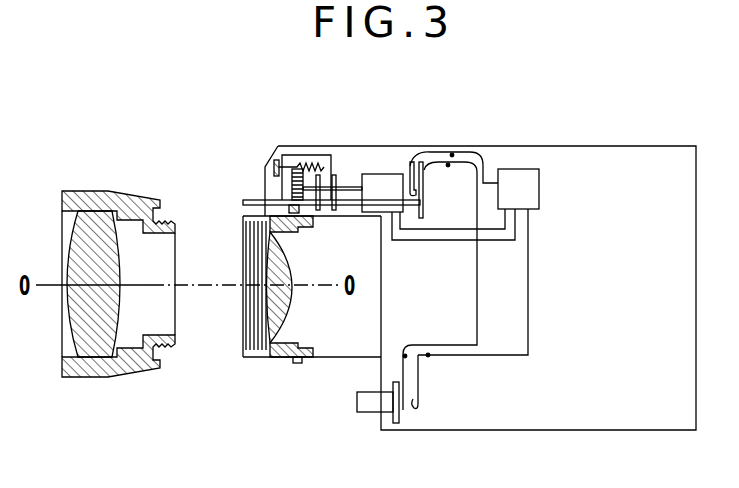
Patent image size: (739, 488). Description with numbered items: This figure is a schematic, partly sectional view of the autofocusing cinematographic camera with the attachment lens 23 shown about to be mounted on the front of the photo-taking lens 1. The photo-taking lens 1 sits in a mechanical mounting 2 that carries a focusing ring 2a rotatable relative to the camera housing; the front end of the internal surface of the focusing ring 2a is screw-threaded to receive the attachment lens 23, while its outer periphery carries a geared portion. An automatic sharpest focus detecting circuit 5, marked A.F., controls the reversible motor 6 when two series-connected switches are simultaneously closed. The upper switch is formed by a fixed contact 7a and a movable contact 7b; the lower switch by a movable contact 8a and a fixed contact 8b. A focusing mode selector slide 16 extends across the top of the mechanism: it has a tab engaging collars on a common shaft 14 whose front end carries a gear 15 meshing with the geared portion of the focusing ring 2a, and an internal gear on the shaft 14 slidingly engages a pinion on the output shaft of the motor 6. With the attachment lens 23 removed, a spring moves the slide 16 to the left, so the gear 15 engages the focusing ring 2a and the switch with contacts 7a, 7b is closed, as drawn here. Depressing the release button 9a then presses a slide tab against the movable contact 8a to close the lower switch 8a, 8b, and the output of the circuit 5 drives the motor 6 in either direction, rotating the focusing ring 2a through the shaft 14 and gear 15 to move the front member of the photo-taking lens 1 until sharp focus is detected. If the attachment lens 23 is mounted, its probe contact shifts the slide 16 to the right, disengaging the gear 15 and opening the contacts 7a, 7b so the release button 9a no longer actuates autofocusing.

The attachment lens 23 is at (105, 360).
The slide 16 is at (252, 198).
The gear 15 is at (295, 168).
The shaft 14 is at (337, 185).
The reversible motor 6 is at (385, 185).
The contact of switch SW7 7a is at (409, 164).
The movable contact of switch SW7 7b is at (425, 182).
The automatic sharpest focus detecting circuit 5 is at (539, 190).
The photo-taking lens 1 is at (267, 357).
The mechanical mounting 2 is at (280, 358).
The focusing ring 2a is at (298, 364).
The release button 9a is at (367, 402).
The movable contact of switch SW8 8a is at (403, 415).
The contact of switch SW8 8b is at (420, 410).